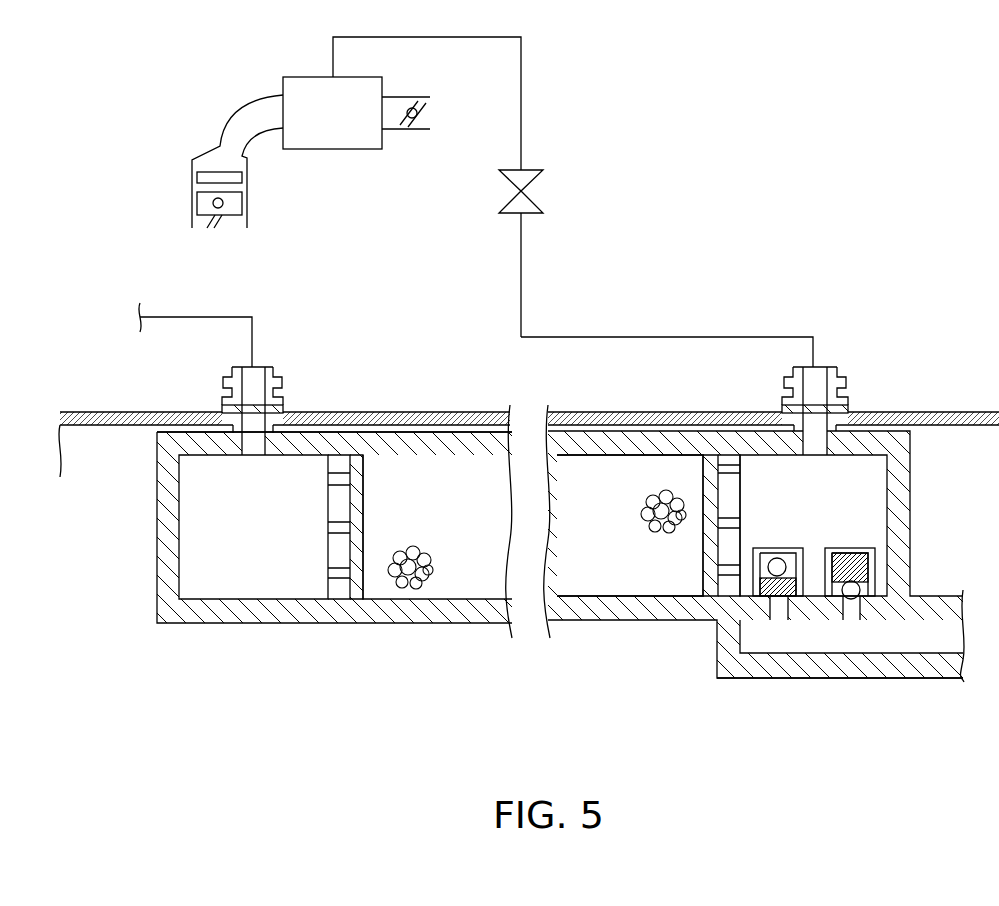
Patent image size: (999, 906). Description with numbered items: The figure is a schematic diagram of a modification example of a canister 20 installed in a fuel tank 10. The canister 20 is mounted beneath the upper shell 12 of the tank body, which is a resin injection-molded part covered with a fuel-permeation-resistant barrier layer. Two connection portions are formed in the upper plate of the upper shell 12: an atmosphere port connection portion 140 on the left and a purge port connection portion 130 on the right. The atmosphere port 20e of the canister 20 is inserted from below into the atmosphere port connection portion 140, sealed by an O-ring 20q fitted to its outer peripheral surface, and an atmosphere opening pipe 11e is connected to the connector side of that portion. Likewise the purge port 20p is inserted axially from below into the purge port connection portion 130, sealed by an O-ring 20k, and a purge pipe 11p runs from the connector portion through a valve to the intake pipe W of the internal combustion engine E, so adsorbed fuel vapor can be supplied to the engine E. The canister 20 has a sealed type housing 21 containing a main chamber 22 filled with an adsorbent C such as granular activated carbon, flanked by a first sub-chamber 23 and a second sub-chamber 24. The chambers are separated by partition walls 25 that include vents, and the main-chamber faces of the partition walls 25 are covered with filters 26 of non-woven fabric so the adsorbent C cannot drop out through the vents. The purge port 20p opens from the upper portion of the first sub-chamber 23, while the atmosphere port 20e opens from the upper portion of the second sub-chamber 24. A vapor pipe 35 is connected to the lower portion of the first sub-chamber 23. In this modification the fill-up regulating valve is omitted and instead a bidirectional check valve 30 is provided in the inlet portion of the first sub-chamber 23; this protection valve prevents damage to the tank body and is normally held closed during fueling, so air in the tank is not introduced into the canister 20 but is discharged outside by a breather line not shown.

The internal combustion engine E is at (239, 108).
The intake pipe W is at (333, 135).
The atmosphere opening pipe 11e is at (170, 317).
The purge pipe 11p is at (592, 337).
The upper shell 12 is at (902, 400).
The atmosphere port 20e is at (228, 378).
The O-ring 20q is at (224, 408).
The atmosphere port connection portion 140 is at (292, 395).
The purge port 20p is at (815, 375).
The O-ring 20k is at (782, 395).
The purge port connection portion 130 is at (845, 390).
The canister 20 is at (393, 632).
The housing 21 is at (465, 432).
The second sub-chamber 24 is at (245, 530).
The partition walls 25 is at (332, 547).
The filters 26 is at (365, 492).
The adsorbent C is at (428, 599).
The fuel tank 10 is at (690, 698).
The main chamber 22 is at (592, 540).
The first sub-chamber 23 is at (840, 487).
The bidirectional check valve 30 is at (810, 547).
The vapor pipe 35 is at (876, 678).